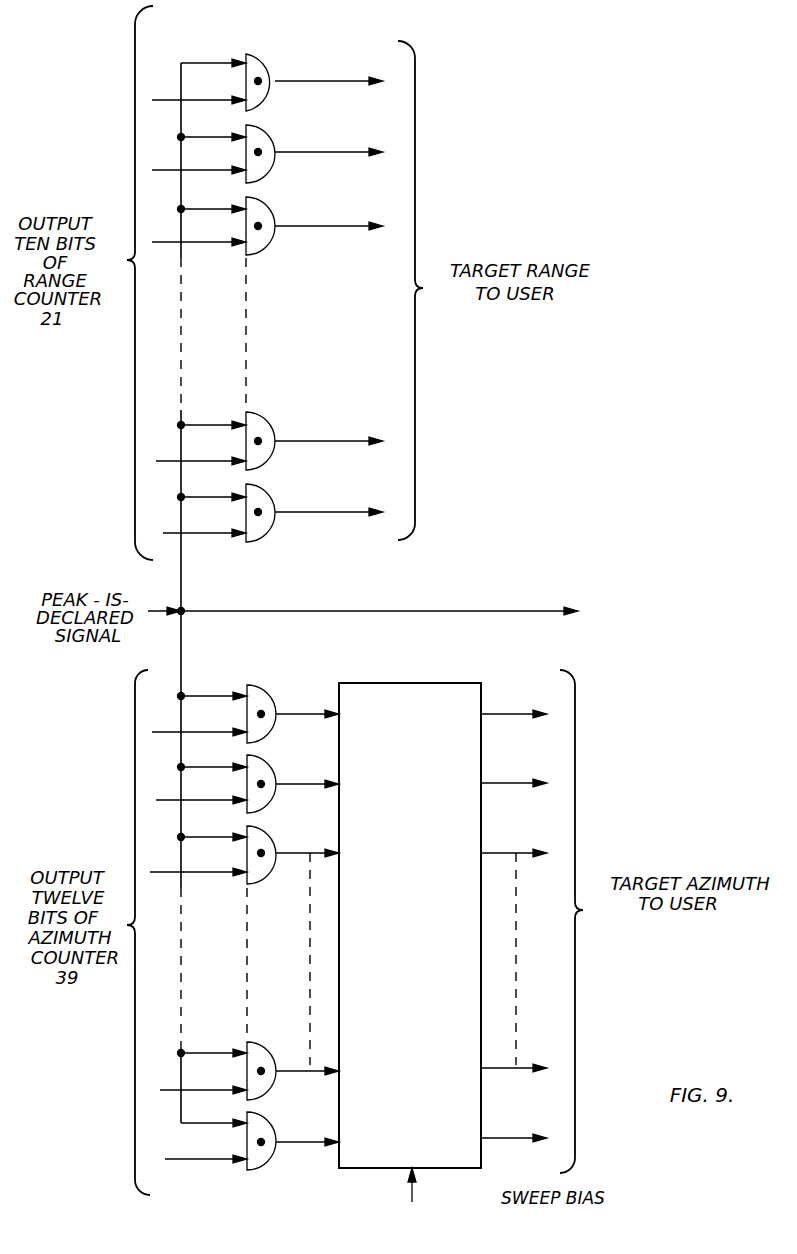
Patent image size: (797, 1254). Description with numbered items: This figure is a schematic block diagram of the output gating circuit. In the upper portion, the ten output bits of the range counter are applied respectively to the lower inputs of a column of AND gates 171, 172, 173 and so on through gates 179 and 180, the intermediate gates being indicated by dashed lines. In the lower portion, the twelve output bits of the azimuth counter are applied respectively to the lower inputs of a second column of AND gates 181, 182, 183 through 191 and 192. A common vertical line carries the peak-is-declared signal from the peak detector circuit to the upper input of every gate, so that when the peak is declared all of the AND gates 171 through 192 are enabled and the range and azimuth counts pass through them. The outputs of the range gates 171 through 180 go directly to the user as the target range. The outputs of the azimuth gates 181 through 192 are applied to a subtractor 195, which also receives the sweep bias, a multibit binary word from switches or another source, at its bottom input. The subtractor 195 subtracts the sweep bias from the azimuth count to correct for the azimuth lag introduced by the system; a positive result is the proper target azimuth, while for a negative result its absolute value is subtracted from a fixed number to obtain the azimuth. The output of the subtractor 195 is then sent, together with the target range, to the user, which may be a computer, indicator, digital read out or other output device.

The AND gate 171 is at (264, 57).
The AND gate 172 is at (264, 128).
The AND gate 173 is at (264, 200).
The AND gate 179 is at (264, 415).
The AND gate 180 is at (264, 487).
The AND gate 181 is at (265, 690).
The AND gate 182 is at (265, 760).
The AND gate 183 is at (265, 830).
The AND gate 191 is at (265, 1046).
The AND gate 192 is at (265, 1116).
The subtractor 195 is at (415, 683).